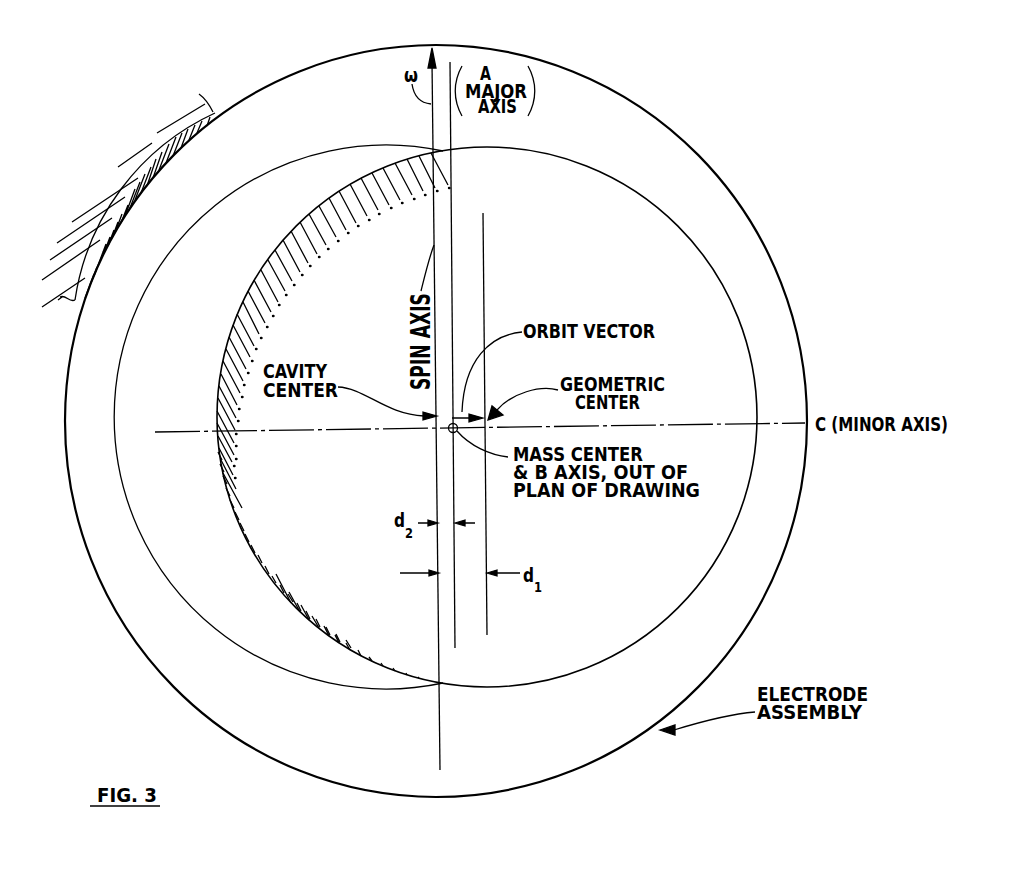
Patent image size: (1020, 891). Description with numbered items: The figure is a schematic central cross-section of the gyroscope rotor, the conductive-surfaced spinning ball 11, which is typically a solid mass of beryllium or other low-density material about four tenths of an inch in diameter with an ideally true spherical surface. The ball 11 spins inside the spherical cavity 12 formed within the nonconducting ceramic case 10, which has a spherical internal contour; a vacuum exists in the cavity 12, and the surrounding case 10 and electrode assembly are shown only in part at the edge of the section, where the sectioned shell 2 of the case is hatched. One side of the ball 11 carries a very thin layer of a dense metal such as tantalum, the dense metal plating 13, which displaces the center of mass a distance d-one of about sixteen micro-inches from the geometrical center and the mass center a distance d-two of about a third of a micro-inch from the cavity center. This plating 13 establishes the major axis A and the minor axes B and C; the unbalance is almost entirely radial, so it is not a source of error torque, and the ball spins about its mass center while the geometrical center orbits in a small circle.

The rotor shell wall section 2 is at (215, 113).
The nonconducting ceramic case 10 is at (112, 189).
The conductive-surfaced spinning ball 11 is at (642, 191).
The spherical cavity 12 is at (77, 325).
The dense metal layer 13 is at (252, 283).